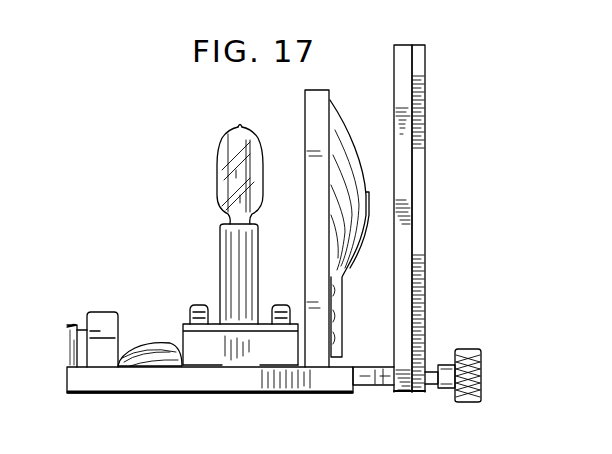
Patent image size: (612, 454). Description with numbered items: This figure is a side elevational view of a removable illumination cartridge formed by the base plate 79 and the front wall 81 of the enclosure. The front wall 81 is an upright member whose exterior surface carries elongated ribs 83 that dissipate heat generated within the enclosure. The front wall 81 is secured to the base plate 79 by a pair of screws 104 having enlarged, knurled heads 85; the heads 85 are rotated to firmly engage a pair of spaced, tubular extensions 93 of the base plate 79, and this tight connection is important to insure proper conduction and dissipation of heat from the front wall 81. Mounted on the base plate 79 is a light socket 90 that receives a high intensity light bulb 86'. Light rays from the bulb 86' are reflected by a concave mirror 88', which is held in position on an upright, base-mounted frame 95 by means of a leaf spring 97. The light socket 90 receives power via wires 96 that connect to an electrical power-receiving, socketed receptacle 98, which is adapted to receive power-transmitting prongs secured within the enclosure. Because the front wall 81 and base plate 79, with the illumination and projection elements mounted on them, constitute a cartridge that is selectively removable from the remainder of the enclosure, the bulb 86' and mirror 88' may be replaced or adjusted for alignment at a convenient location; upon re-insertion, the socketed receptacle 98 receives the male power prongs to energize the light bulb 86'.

The base plate 79 is at (218, 389).
The front wall 81 is at (404, 50).
The elongated ribs 83 is at (425, 59).
The knurled heads 85 is at (462, 352).
The high intensity light bulb 86' is at (217, 175).
The concave mirror 88' is at (356, 225).
The light socket 90 is at (221, 260).
The tubular extensions 93 is at (372, 367).
The upright, base-mounted frame 95 is at (316, 97).
The wires 96 is at (152, 346).
The leaf spring 97 is at (349, 250).
The socketed receptacle 98 is at (106, 318).
The screws 104 is at (428, 374).